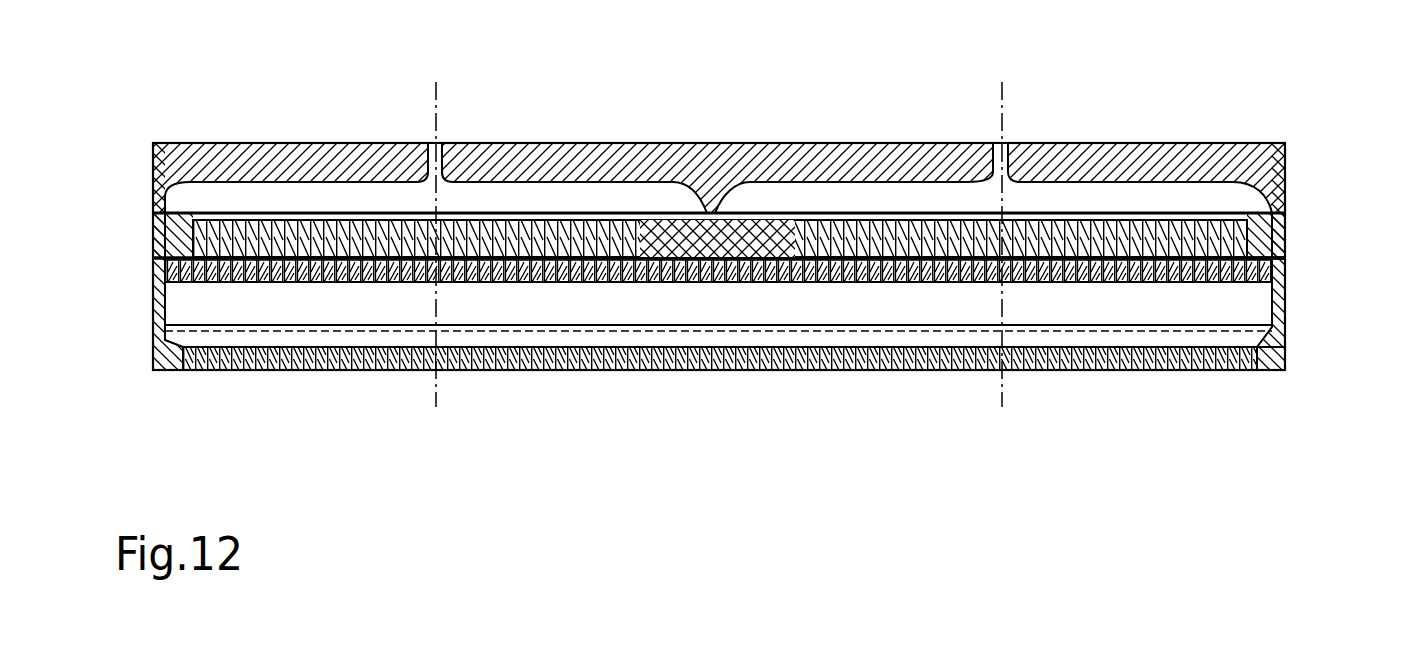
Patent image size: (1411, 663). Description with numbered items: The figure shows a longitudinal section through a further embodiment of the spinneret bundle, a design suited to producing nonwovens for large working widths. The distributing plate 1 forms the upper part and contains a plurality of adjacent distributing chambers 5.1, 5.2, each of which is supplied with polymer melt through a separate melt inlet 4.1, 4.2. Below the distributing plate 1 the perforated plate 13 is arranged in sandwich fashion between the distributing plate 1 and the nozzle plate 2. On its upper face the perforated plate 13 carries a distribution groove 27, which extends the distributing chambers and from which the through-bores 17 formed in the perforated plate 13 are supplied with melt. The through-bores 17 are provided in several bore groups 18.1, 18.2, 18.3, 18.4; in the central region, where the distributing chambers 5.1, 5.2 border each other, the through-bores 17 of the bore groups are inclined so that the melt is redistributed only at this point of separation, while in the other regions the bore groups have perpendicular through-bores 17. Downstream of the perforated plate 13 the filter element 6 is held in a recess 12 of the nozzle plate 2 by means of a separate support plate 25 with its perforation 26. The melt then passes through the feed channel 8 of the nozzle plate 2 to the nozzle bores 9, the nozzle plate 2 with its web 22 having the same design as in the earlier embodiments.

The distributing plate 1 is at (1210, 143).
The nozzle plate 2 is at (1277, 310).
The melt inlet 4.1 is at (445, 143).
The melt inlet 4.2 is at (1010, 143).
The distributing chamber 5.1 is at (297, 192).
The distributing chamber 5.2 is at (755, 200).
The filter element 6 is at (1283, 237).
The feed channel 8 is at (203, 303).
The nozzle bores 9 is at (247, 370).
The recess 12 is at (1290, 283).
The perforated plate 13 is at (1285, 213).
The through-bore 17 is at (160, 238).
The bore group 18.1 is at (591, 186).
The bore group 18.2 is at (591, 186).
The bore group 18.3 is at (895, 188).
The bore group 18.4 is at (895, 188).
The web 22 is at (1277, 350).
The support plate 25 is at (1283, 263).
The perforation 26 is at (192, 284).
The distribution groove 27 is at (223, 220).